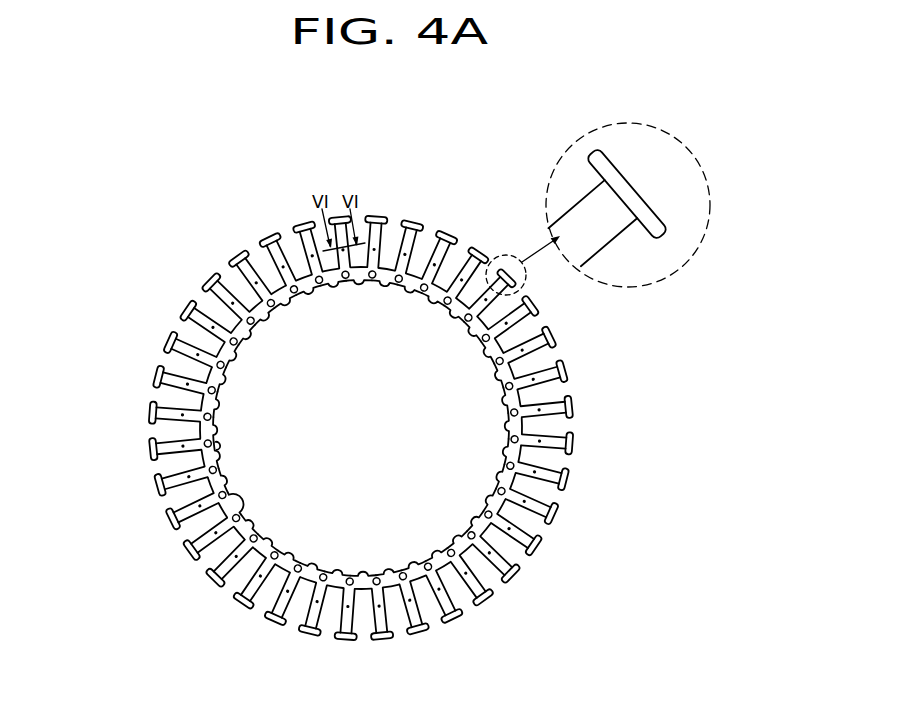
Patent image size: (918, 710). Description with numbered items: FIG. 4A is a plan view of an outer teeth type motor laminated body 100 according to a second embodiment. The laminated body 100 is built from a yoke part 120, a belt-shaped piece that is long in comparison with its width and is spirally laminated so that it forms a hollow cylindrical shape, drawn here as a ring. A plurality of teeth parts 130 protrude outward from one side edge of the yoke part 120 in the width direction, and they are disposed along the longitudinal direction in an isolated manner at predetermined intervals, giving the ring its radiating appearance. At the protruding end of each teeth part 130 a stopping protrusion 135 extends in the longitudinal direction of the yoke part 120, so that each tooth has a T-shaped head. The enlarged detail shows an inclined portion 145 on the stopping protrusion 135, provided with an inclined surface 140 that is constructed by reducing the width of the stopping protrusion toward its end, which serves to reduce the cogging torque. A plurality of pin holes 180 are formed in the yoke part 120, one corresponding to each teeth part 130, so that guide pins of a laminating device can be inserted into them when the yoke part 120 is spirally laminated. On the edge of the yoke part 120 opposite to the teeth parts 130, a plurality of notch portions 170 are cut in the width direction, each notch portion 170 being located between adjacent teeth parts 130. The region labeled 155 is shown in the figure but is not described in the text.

The laminated body 100 is at (237, 251).
The slot 155 is at (237, 289).
The yoke part 120 is at (173, 513).
The teeth part 130 is at (558, 442).
The stopping protrusion 135 is at (577, 440).
The notch portion 170 is at (206, 437).
The pin hole 180 is at (212, 468).
The inclined surface 140 is at (664, 241).
The inclined portion 145 is at (664, 237).